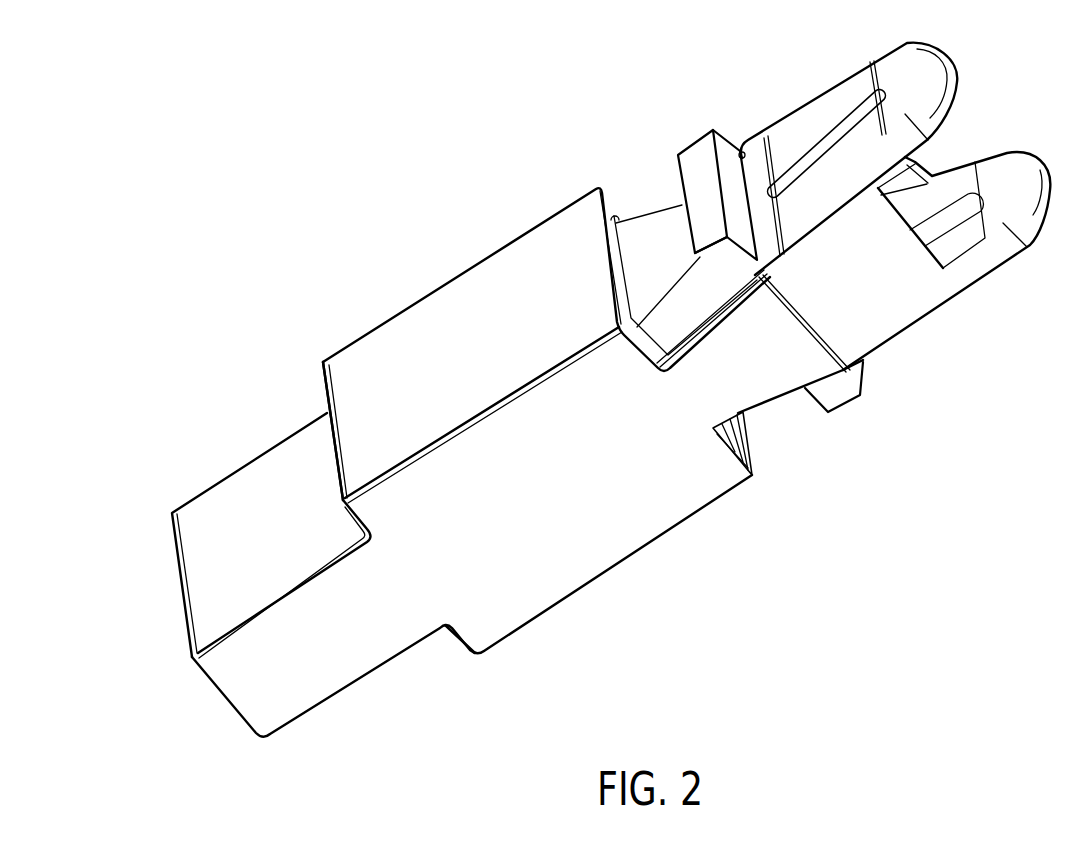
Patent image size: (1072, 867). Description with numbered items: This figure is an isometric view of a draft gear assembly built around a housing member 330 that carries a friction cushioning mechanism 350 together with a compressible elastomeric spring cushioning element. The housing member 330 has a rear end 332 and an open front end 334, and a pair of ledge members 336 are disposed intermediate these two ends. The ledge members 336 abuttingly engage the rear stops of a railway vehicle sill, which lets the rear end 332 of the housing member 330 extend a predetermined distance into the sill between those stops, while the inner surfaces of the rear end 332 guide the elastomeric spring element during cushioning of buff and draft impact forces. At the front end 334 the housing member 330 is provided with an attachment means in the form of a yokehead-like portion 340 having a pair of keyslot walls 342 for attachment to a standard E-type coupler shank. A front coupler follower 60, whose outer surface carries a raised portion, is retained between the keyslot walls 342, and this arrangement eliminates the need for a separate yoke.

The housing member 330 is at (538, 210).
The rear end 332 is at (210, 518).
The front end 334 is at (688, 475).
The ledge members 336 is at (320, 389).
The yokehead-like portion 340 is at (897, 290).
The keyslot walls 342 is at (944, 100).
The friction cushioning mechanism 350 is at (651, 207).
The front coupler follower 60 is at (843, 404).